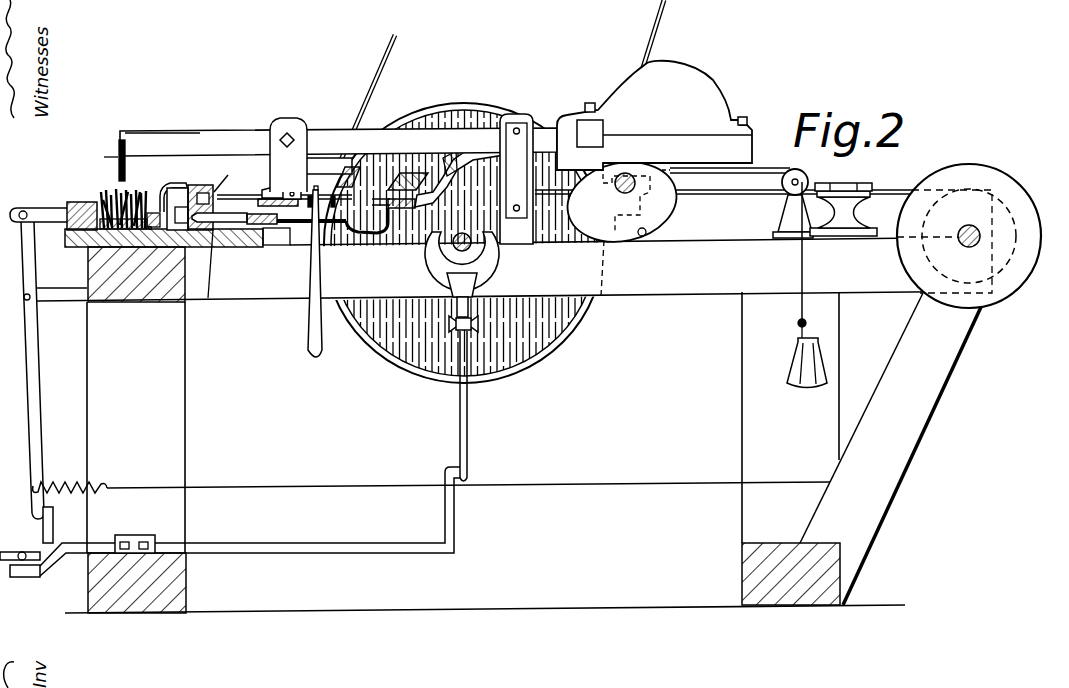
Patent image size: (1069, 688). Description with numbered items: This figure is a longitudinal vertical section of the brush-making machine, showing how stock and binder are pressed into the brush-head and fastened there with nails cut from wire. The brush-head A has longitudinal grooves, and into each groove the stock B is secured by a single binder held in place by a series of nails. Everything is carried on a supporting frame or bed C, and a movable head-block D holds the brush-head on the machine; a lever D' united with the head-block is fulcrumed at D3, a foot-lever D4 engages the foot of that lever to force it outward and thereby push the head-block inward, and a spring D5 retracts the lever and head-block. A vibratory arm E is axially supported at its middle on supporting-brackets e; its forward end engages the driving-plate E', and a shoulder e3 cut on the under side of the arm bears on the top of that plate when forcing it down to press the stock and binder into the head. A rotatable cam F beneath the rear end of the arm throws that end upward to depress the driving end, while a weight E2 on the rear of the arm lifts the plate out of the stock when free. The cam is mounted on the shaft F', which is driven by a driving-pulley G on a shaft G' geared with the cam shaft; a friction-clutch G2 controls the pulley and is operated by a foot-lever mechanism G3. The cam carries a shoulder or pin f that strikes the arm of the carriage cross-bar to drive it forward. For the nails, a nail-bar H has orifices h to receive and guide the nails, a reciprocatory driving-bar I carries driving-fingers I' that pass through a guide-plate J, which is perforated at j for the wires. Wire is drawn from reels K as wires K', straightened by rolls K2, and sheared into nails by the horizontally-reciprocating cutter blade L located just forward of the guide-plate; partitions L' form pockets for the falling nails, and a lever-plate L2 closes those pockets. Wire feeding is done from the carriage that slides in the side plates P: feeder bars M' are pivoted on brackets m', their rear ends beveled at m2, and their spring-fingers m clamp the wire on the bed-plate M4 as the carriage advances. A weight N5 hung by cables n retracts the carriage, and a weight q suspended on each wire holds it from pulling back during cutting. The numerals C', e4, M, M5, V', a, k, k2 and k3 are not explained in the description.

The brush-head A is at (523, 420).
The stock B is at (117, 205).
The supporting frame C is at (523, 269).
The bracket C' is at (297, 150).
The movable head-block D is at (53, 210).
The lever D' is at (22, 370).
The fulcrum D3 is at (44, 293).
The foot-lever D4 is at (26, 542).
The spring D5 is at (70, 476).
The vibratory arm E is at (338, 142).
The driving-plate E' is at (103, 162).
The weight E2 is at (654, 115).
The supporting-bracket e is at (285, 148).
The shoulder e3 is at (162, 121).
The end bolt e4 is at (108, 157).
The rotatable cam F is at (622, 201).
The cam shaft F' is at (626, 198).
The shoulder or pin f is at (638, 233).
The driving-pulley G is at (464, 243).
The pulley shaft G' is at (455, 230).
The friction-clutch G2 is at (462, 274).
The foot-lever mechanism G3 is at (38, 572).
The nail-bar H is at (153, 211).
The orifice h is at (150, 228).
The reciprocatory driving-bar I is at (269, 211).
The driving-finger I' is at (215, 264).
The guide-plate J is at (205, 185).
The perforation j is at (225, 179).
The reel K is at (969, 241).
The wire K' is at (835, 203).
The straightening rolls K2 is at (846, 150).
The cutter blade L is at (177, 209).
The partition L' is at (188, 235).
The lever-plate L2 is at (170, 193).
The plate M is at (331, 172).
The wire-feeder bar M' is at (292, 181).
The bed-plate M4 is at (266, 189).
The clamp bar M5 is at (282, 210).
The spring-finger m is at (255, 189).
The bracket m' is at (284, 194).
The beveled rear end m2 is at (375, 168).
The weight N5 is at (792, 352).
The cable n is at (727, 181).
The side plate P is at (465, 179).
The weight q is at (322, 348).
The lever arm V' is at (497, 169).
The collar a is at (459, 317).
The rod k is at (372, 203).
The collar k2 is at (410, 206).
The hook k3 is at (367, 227).